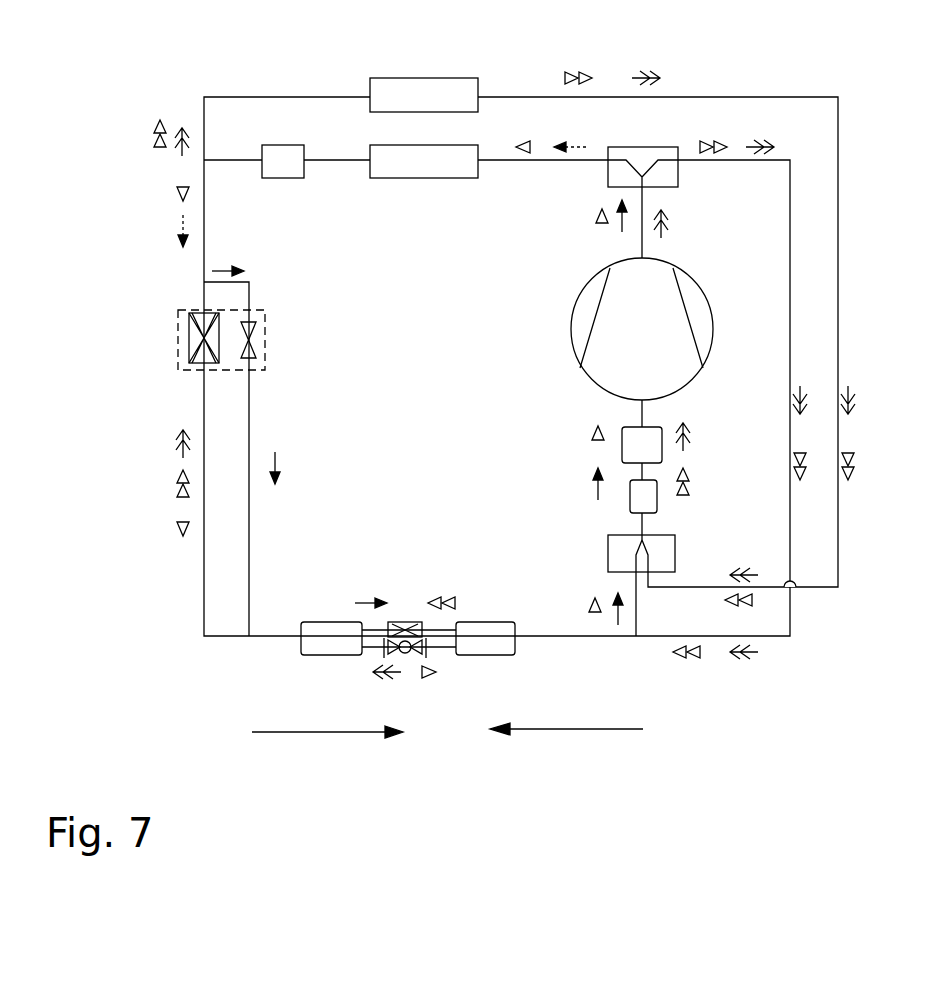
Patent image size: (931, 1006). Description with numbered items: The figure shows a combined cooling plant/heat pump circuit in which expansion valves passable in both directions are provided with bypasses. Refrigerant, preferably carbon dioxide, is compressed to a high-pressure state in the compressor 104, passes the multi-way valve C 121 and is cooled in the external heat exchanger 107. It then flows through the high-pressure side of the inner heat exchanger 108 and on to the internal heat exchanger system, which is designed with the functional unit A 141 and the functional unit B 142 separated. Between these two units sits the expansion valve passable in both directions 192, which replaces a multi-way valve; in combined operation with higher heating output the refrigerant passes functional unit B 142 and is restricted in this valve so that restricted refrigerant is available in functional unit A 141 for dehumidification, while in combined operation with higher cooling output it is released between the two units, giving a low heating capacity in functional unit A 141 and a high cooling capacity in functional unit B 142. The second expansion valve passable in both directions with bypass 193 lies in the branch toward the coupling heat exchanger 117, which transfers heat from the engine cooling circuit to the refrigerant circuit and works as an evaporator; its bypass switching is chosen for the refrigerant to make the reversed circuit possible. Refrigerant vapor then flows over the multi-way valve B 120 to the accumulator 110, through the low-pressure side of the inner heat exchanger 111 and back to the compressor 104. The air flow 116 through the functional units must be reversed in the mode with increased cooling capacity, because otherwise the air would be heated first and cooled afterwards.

The compressor 104 is at (568, 323).
The external heat exchanger 107 is at (430, 162).
The inner heat exchanger 108 is at (283, 168).
The accumulator 110 is at (648, 498).
The inner heat exchanger 111 is at (642, 448).
The air flow 116 is at (285, 732).
The coupling heat exchanger 117 is at (423, 100).
The multi-way valve B 120 is at (660, 540).
The multi-way valve C 121 is at (637, 158).
The functional unit A 141 is at (332, 637).
The functional unit B 142 is at (487, 637).
The expansion valve passable in both directions 192 is at (405, 630).
The expansion valve passable in both directions with bypass 193 is at (254, 339).